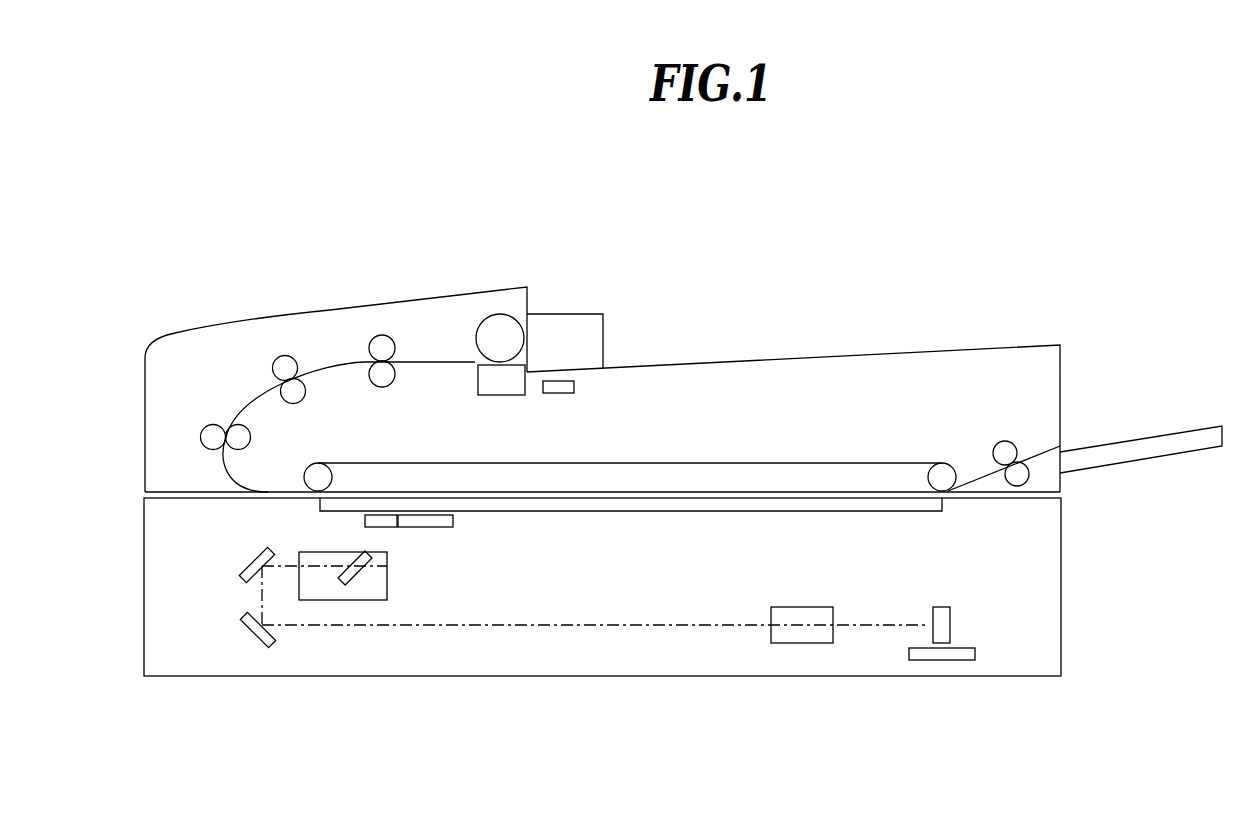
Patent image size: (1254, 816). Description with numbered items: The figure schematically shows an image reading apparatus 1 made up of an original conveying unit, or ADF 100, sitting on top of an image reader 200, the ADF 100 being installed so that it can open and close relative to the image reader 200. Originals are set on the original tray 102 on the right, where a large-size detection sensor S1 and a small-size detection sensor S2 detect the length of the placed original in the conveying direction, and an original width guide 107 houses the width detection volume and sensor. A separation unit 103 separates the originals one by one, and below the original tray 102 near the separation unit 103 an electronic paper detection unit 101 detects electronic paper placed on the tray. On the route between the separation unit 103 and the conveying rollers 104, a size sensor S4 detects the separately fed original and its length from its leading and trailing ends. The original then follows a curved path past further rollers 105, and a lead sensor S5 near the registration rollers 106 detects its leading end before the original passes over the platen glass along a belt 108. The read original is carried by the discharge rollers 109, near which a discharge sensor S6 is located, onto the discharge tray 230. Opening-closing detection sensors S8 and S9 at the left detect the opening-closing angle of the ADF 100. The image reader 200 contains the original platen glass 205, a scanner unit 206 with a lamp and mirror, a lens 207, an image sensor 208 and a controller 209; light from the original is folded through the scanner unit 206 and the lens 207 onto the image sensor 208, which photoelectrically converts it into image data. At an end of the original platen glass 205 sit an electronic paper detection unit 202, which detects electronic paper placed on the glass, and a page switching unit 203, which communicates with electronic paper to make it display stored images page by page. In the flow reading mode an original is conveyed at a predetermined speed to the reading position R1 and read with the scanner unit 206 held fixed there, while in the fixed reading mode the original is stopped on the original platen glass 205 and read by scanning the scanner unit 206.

The image reading apparatus 1 is at (707, 253).
The original conveying unit (ADF) 100 is at (391, 302).
The electronic paper detection unit 101 is at (562, 394).
The original tray 102 is at (827, 358).
The separation unit 103 is at (505, 396).
The conveying rollers 104 is at (381, 388).
The conveyance roller pair 105 is at (315, 343).
The registration rollers 106 is at (243, 430).
The original width guide 107 is at (575, 313).
The conveyance belt 108 is at (620, 462).
The discharge rollers 109 is at (1022, 472).
The discharge tray 230 is at (1120, 443).
The image reader 200 is at (1062, 535).
The electronic paper detection unit 202 is at (373, 527).
The page switching unit 203 is at (453, 521).
The original platen glass 205 is at (652, 512).
The scanner unit 206 is at (387, 567).
The lens 207 is at (800, 607).
The image sensor 208 is at (940, 607).
The controller 209 is at (977, 652).
The reading position R1 is at (340, 504).
The large-size detection sensor S1 is at (925, 387).
The small-size detection sensor S2 is at (705, 397).
The size sensor S4 is at (442, 387).
The lead sensor S5 is at (263, 450).
The discharge sensor S6 is at (1034, 430).
The opening-closing detection sensor S8 is at (172, 523).
The opening-closing detection sensor S9 is at (202, 523).